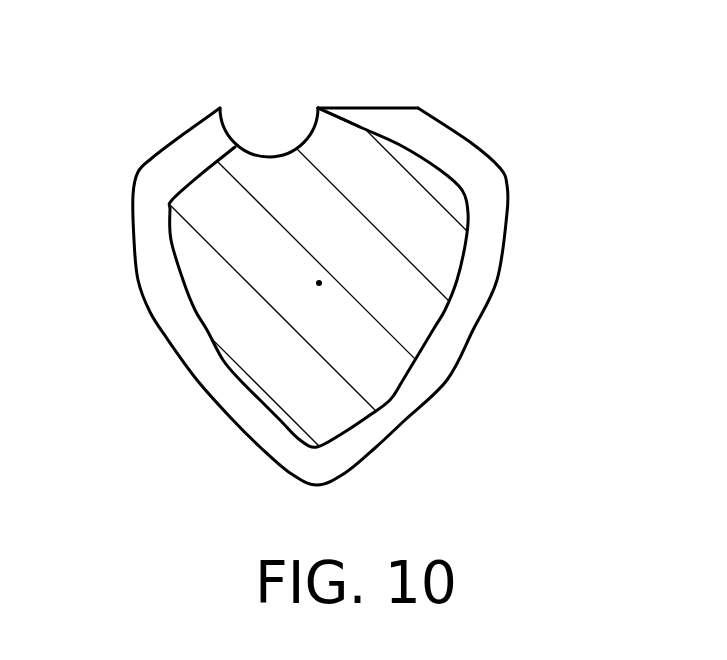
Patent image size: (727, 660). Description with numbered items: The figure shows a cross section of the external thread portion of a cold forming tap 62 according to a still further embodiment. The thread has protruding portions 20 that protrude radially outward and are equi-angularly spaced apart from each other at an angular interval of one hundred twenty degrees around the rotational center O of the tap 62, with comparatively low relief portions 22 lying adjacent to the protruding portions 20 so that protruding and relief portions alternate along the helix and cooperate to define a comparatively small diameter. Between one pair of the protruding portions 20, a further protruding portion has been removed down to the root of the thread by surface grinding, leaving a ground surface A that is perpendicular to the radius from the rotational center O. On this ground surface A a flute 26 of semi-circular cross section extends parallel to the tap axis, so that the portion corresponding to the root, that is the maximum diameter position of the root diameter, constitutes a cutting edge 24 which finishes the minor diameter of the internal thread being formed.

The protruding portions 20 is at (323, 294).
The relief portions 22 is at (152, 372).
The cutting edge 24 is at (318, 108).
The flute 26 is at (275, 155).
The cold forming tap 62 is at (351, 290).
The ground surface A is at (393, 108).
The rotational center O is at (329, 296).